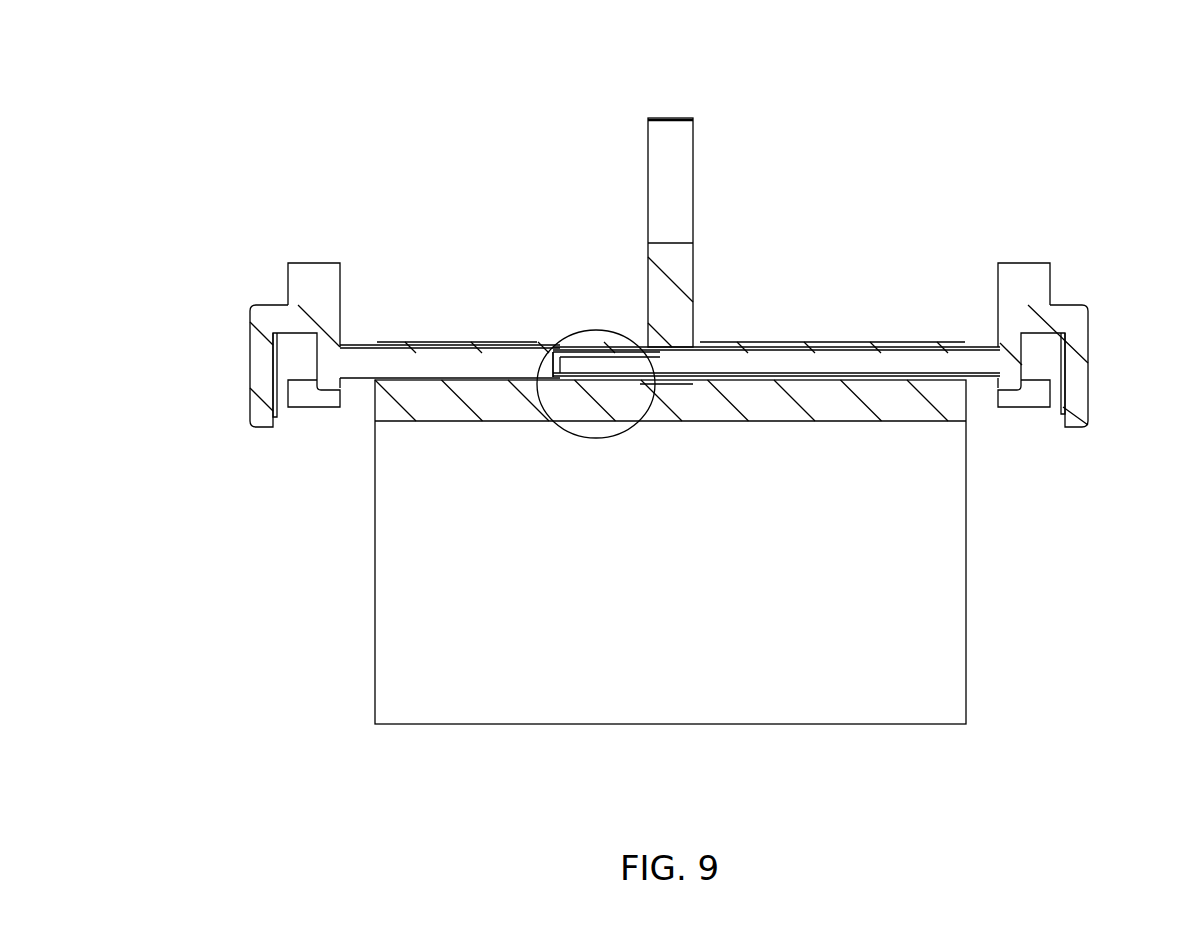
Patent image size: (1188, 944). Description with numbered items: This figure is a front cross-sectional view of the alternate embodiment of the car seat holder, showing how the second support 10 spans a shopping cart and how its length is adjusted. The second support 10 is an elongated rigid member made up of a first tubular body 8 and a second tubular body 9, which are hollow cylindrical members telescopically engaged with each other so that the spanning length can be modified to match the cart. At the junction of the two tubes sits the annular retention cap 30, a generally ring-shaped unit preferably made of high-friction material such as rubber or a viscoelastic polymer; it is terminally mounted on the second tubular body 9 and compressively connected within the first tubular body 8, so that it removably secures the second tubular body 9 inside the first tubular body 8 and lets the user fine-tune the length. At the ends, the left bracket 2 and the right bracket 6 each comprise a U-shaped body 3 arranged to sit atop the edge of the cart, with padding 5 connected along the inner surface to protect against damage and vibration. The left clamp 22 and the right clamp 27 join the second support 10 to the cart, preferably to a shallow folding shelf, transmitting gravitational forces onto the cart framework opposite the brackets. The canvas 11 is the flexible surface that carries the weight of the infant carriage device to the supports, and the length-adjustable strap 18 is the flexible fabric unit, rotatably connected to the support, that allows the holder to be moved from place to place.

The left bracket 2 is at (258, 345).
The U-shaped body 3 is at (267, 287).
The padding 5 is at (276, 405).
The right bracket 6 is at (1078, 326).
The first tubular body 8 is at (430, 360).
The second tubular body 9 is at (905, 360).
The second support 10 is at (652, 357).
The canvas 11 is at (681, 607).
The length-adjustable strap 18 is at (667, 94).
The left clamp 22 is at (310, 225).
The right clamp 27 is at (1018, 234).
The annular retention cap 30 is at (562, 348).